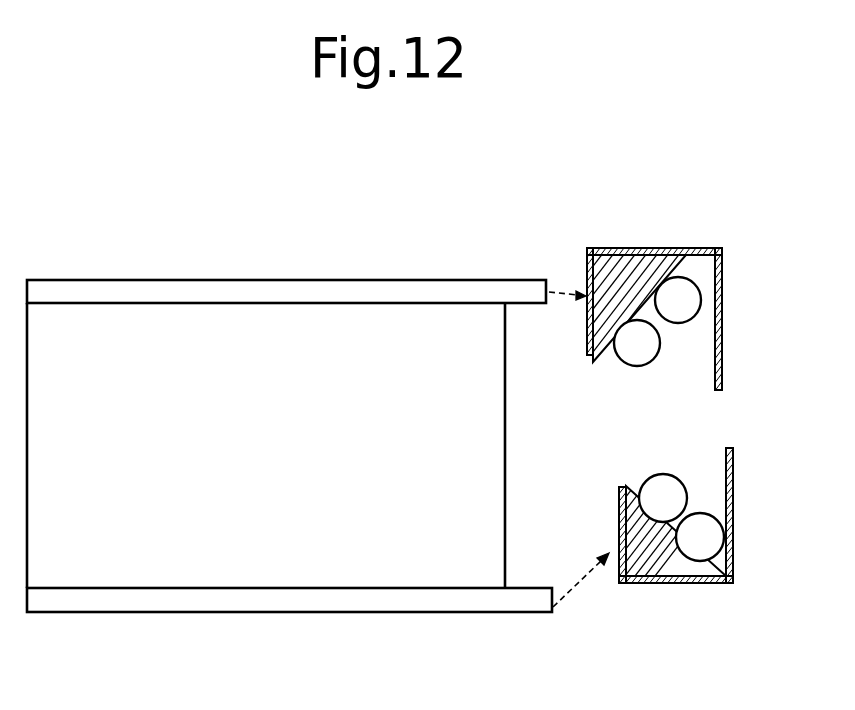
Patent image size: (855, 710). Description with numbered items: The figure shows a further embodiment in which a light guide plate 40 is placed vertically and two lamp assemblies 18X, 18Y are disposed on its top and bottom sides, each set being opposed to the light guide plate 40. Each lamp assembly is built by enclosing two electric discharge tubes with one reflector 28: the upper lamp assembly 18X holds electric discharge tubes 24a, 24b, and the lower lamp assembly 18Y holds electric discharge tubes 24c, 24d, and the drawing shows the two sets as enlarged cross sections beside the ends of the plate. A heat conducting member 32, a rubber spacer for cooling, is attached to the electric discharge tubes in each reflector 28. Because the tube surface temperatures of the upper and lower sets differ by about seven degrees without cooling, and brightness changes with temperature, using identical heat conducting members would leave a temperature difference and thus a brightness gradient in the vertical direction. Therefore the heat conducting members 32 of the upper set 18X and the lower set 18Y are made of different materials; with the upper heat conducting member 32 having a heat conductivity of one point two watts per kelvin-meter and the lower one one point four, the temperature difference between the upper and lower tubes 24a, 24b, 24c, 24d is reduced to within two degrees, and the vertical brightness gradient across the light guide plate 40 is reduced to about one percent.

The light guide plate 40 is at (282, 342).
The lamp assembly 18X is at (430, 291).
The lamp assembly 18Y is at (397, 600).
The reflector 28 is at (723, 258).
The heat conducting member 32 is at (620, 267).
The electric discharge tube 24a is at (648, 342).
The electric discharge tube 24b is at (687, 297).
The electric discharge tube 24c is at (673, 497).
The electric discharge tube 24d is at (708, 541).